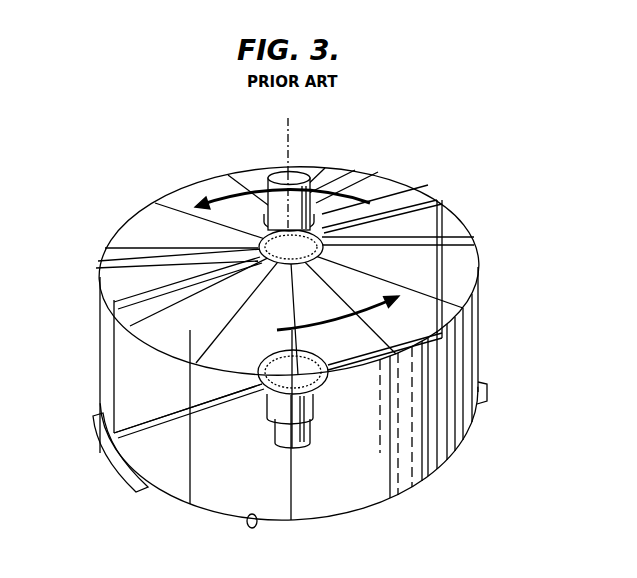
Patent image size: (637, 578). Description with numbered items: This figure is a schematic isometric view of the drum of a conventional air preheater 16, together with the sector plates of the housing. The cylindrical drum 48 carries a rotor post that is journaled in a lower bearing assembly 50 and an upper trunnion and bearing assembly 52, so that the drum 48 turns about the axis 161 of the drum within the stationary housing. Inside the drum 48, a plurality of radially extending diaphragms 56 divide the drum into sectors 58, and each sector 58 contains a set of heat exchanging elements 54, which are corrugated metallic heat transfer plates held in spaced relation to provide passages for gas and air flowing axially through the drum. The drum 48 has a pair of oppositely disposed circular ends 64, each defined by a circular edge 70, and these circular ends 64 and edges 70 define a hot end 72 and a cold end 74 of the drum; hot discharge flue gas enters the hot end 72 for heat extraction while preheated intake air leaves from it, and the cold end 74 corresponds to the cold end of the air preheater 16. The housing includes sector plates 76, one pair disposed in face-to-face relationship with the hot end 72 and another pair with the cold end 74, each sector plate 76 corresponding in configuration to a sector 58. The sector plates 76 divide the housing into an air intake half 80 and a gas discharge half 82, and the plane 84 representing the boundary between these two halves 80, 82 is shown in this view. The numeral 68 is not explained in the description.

The air preheater 16 is at (490, 318).
The cylindrical drum 48 is at (466, 443).
The lower bearing assembly 50 is at (322, 416).
The upper trunnion and bearing assembly 52 is at (318, 202).
The heat exchanging elements 54 is at (162, 211).
The radially extending diaphragms 56 is at (136, 243).
The sectors 58 is at (198, 183).
The circular ends 64 is at (335, 178).
The curved plate 68 is at (411, 358).
The circular edge 70 is at (137, 235).
The hot end of the drum 72 is at (251, 513).
The cold end of the drum 74 is at (240, 338).
The sector plates 76 is at (413, 186).
The air intake half 80 is at (457, 294).
The gas discharge half 82 is at (317, 176).
The plane 84 is at (172, 407).
The axis of the drum 161 is at (287, 133).